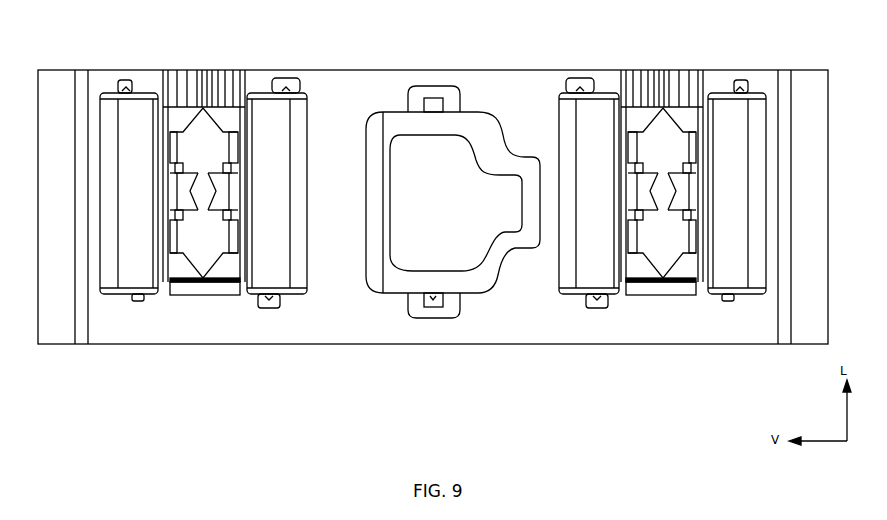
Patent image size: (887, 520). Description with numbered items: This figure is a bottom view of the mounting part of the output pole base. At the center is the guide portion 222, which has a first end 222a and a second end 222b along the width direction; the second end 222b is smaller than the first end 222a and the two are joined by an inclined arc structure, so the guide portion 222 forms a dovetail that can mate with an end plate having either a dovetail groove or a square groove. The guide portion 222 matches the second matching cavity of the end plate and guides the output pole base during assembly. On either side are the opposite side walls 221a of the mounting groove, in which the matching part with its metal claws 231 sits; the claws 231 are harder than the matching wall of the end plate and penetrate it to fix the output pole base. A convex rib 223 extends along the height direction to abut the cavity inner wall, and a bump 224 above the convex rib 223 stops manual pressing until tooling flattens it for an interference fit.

The side wall 221a is at (612, 287).
The guide portion 222 is at (459, 224).
The first end 222a is at (447, 287).
The second end 222b is at (527, 240).
The convex rib 223 is at (442, 85).
The bump 224 is at (423, 85).
The claw 231 is at (185, 295).